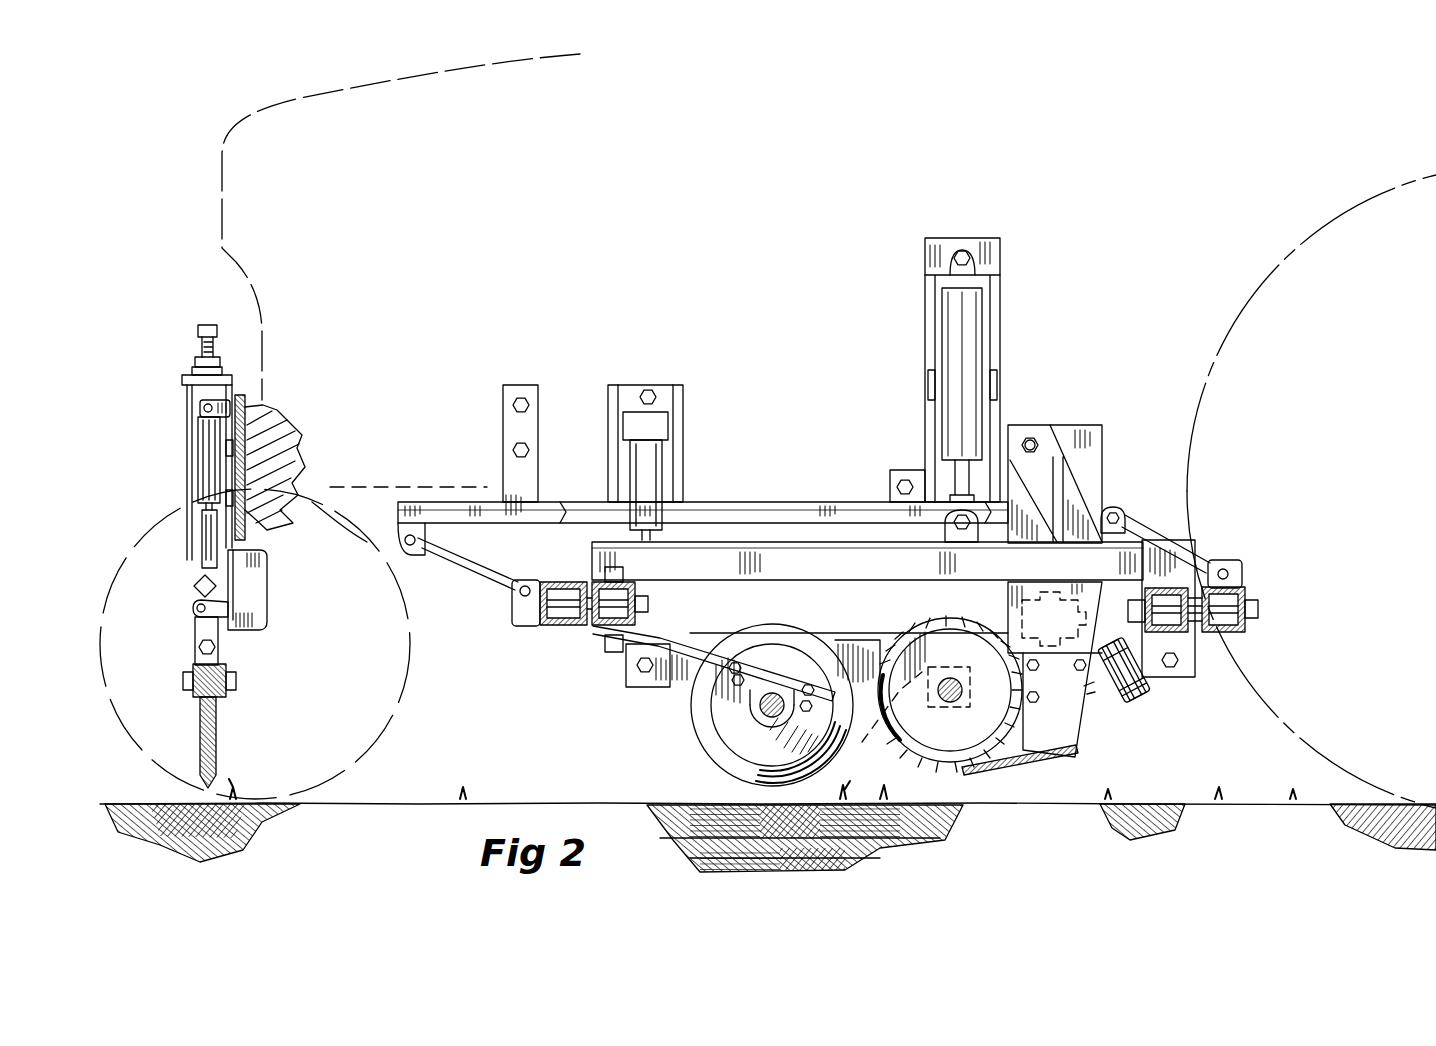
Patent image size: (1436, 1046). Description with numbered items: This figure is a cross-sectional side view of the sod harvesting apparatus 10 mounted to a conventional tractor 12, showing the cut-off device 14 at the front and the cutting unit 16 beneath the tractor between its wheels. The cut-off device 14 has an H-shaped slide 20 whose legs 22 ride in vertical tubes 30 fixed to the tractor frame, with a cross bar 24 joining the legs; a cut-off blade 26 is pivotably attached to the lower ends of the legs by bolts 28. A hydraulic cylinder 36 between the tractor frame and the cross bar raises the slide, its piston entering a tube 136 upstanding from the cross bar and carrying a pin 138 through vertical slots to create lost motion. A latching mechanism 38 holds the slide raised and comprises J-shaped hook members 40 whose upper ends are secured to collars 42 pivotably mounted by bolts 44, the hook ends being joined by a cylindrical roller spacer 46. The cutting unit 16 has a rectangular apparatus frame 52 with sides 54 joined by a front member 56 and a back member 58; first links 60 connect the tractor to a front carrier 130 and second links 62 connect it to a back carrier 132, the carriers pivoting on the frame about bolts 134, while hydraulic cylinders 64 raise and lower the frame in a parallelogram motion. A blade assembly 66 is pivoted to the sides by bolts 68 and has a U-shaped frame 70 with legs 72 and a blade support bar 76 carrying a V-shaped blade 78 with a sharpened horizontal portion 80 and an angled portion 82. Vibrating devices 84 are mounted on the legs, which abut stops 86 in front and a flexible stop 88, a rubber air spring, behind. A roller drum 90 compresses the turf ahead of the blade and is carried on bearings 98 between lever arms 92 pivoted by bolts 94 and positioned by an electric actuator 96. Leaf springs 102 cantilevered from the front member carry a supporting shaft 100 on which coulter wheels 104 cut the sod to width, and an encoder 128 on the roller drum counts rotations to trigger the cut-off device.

The apparatus for harvesting sod 10 is at (757, 308).
The tractor 12 is at (238, 128).
The cut-off device 14 is at (190, 352).
The cutting unit 16 is at (690, 688).
The slide 20 is at (185, 592).
The legs 22 is at (222, 633).
The cross bar 24 is at (193, 600).
The cut-off blade 26 is at (218, 755).
The bolts 28 is at (222, 657).
The vertical tubes 30 is at (186, 405).
The hydraulic cylinder 36 is at (200, 446).
The latching mechanism 38 is at (290, 603).
The J-shaped hook members 40 is at (268, 620).
The collars 42 is at (268, 580).
The bolts 44 is at (240, 535).
The cylindrical roller spacer 46 is at (200, 628).
The apparatus frame 52 is at (588, 558).
The sides 54 is at (716, 580).
The front member 56 is at (596, 646).
The back member 58 is at (1175, 640).
The first links 60 is at (470, 575).
The second links 62 is at (1166, 497).
The hydraulic cylinders 64 is at (950, 343).
The blade assembly 66 is at (1090, 420).
The bolts 68 is at (1030, 435).
The frame 70 is at (1085, 462).
The legs 72 is at (1104, 470).
The blade support bar 76 is at (1062, 752).
The blade 78 is at (1016, 776).
The horizontal portion 80 is at (985, 770).
The angled portion 82 is at (1044, 758).
The vibrating devices 84 is at (1012, 604).
The stops 86 is at (1000, 586).
The flexible stop 88 is at (1138, 700).
The roller drum 90 is at (908, 748).
The lever arms 92 is at (852, 632).
The bolts 94 is at (1172, 670).
The electric actuator 96 is at (663, 468).
The bearings 98 is at (950, 702).
The supporting shaft 100 is at (760, 712).
The leaf springs 102 is at (780, 655).
The coulter wheels 104 is at (722, 758).
The encoder 128 is at (868, 735).
The front carrier 130 is at (556, 628).
The back carrier 132 is at (1246, 626).
The bolts 134 is at (522, 612).
The tube 136 is at (202, 522).
The pin 138 is at (198, 585).